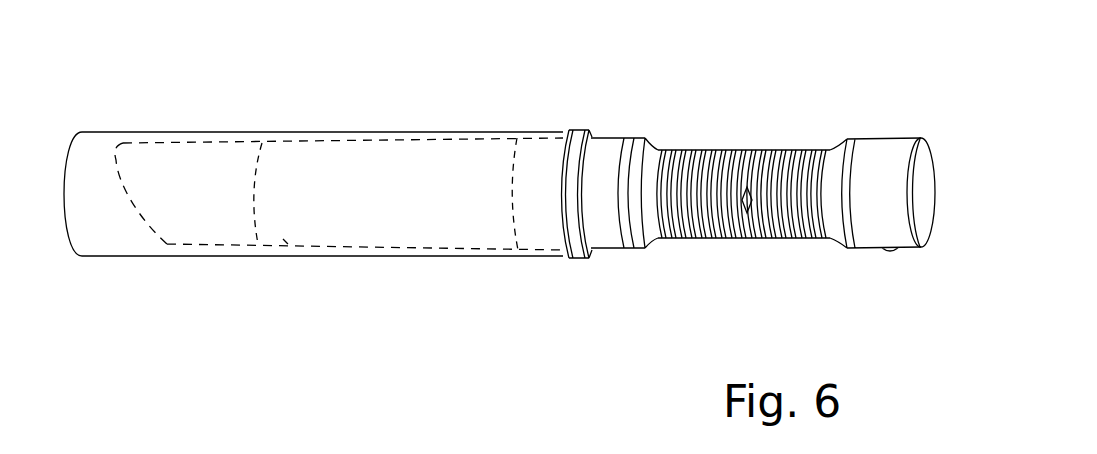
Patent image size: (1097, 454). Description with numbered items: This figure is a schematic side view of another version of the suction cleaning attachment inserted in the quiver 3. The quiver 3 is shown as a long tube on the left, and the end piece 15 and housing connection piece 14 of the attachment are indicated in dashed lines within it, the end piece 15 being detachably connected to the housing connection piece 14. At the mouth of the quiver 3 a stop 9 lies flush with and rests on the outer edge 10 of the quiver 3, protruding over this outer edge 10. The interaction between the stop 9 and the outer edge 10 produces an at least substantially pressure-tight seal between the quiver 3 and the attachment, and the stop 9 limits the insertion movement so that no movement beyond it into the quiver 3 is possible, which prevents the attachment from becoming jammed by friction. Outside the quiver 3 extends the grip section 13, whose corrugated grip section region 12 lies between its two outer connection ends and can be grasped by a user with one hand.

The quiver 3 is at (146, 132).
The end piece 15 is at (197, 143).
The housing connection piece 14 is at (380, 140).
The stop 9 is at (578, 130).
The outer edge of the quiver 10 is at (570, 130).
The grip section region 12 is at (740, 239).
The grip section 13 is at (743, 163).